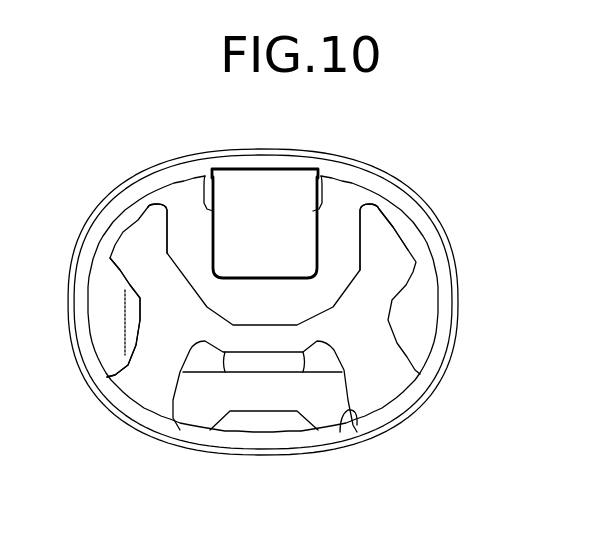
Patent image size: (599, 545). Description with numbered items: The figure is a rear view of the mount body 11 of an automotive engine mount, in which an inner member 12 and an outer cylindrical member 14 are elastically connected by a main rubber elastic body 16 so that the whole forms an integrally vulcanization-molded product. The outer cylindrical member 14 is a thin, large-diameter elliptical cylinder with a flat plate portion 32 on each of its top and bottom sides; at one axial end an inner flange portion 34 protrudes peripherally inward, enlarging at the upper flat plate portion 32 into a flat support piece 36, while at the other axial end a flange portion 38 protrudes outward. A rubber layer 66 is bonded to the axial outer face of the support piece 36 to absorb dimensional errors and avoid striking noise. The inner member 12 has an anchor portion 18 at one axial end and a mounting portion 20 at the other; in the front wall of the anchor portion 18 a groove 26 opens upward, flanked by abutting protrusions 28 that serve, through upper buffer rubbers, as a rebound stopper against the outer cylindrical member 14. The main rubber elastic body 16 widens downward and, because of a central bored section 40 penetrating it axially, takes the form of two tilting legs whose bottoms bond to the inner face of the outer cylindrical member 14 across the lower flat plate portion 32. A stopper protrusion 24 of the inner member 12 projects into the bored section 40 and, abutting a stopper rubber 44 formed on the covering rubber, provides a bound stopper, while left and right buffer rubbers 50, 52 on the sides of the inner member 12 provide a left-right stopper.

The mount body 11 is at (292, 311).
The inner member 12 is at (333, 307).
The outer cylindrical member 14 is at (385, 428).
The main rubber elastic body 16 is at (127, 345).
The anchor portion 18 is at (188, 240).
The mounting portion 20 is at (133, 302).
The stopper protrusion 24 is at (237, 365).
The groove 26 is at (208, 192).
The abutting protrusions 28 is at (340, 197).
The flat plate portion 32 is at (272, 160).
The inner flange portion 34 is at (133, 407).
The support piece 36 is at (334, 277).
The flange portion 38 is at (432, 392).
The bored section 40 is at (357, 412).
The stopper rubber 44 is at (277, 422).
The left buffer rubber 50 is at (385, 248).
The right buffer rubber 52 is at (142, 247).
The rubber layer 66 is at (293, 238).